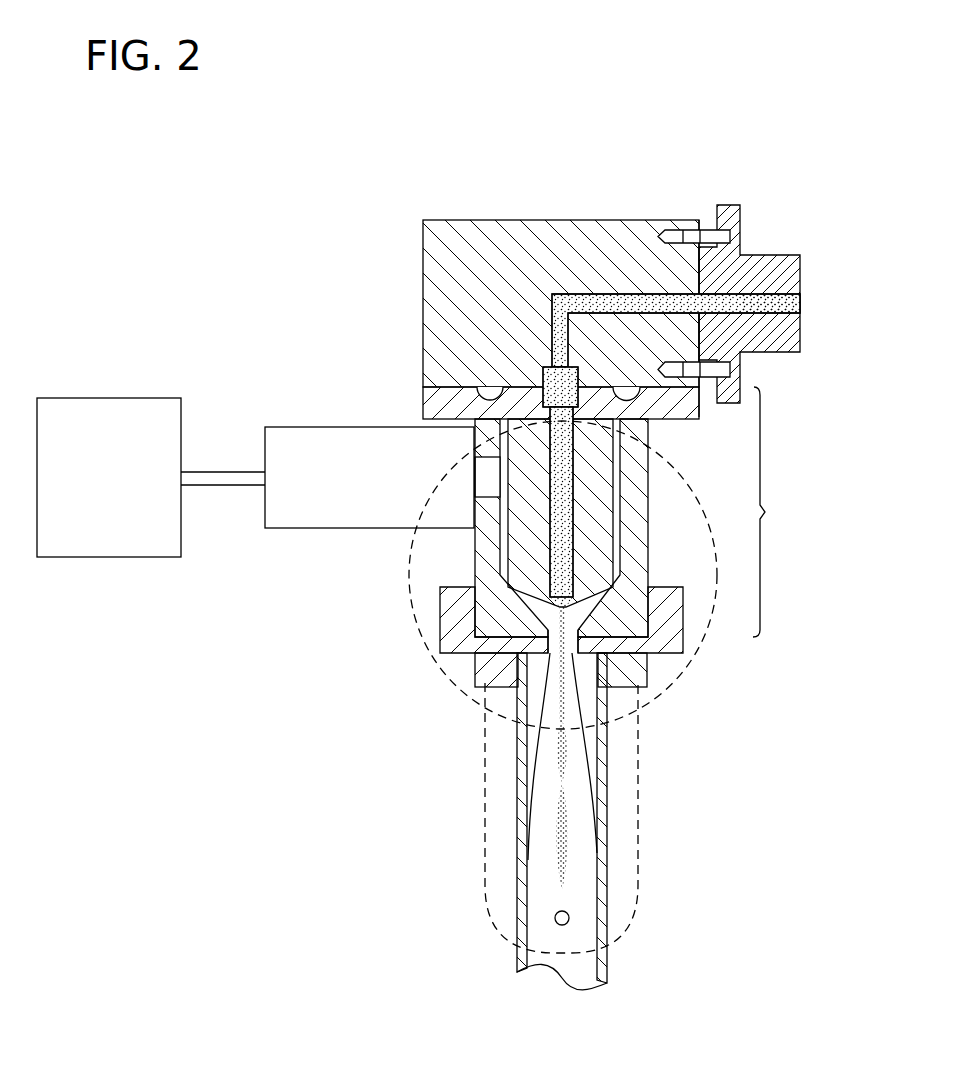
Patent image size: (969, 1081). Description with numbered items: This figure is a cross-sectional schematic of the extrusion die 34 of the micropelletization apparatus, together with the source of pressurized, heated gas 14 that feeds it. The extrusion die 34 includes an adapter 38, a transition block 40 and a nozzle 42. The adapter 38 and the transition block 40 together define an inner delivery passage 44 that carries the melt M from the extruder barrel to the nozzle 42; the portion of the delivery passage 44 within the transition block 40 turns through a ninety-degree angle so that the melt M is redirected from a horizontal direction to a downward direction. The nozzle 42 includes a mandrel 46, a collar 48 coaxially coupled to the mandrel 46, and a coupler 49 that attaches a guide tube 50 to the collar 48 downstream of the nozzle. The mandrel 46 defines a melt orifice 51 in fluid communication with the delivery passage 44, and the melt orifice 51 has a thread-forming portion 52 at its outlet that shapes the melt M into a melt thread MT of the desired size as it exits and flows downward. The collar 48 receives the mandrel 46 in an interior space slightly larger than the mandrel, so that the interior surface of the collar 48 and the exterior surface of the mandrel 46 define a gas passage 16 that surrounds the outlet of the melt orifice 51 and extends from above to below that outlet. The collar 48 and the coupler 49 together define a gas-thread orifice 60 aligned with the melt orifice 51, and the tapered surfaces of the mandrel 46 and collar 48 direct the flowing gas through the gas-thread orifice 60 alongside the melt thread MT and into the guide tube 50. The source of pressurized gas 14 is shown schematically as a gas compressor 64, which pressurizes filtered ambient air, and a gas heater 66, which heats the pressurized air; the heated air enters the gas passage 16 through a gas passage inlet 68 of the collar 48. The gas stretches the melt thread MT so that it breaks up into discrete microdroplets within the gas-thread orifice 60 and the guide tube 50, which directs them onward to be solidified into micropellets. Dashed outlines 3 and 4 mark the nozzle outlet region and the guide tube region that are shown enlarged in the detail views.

The source of pressurized, heated gas 14 is at (238, 375).
The extrusion die 34 is at (383, 307).
The transition block 40 is at (498, 220).
The inner delivery passage 44 is at (613, 297).
The adapter 38 is at (767, 257).
The melt M is at (767, 307).
The gas passage inlet 68 is at (485, 477).
The gas compressor 64 is at (131, 491).
The gas heater 66 is at (371, 501).
The nozzle 42 is at (779, 512).
The mandrel 46 is at (540, 526).
The melt orifice 51 is at (552, 560).
The collar 48 is at (497, 603).
The thread-forming portion 52 is at (505, 640).
The detail region 3 is at (467, 702).
The gas passage 16 is at (610, 543).
The coupler 49 is at (670, 633).
The gas-thread orifice 60 is at (567, 645).
The melt thread MT is at (567, 657).
The detail region 4 is at (640, 777).
The guide tube 50 is at (607, 873).